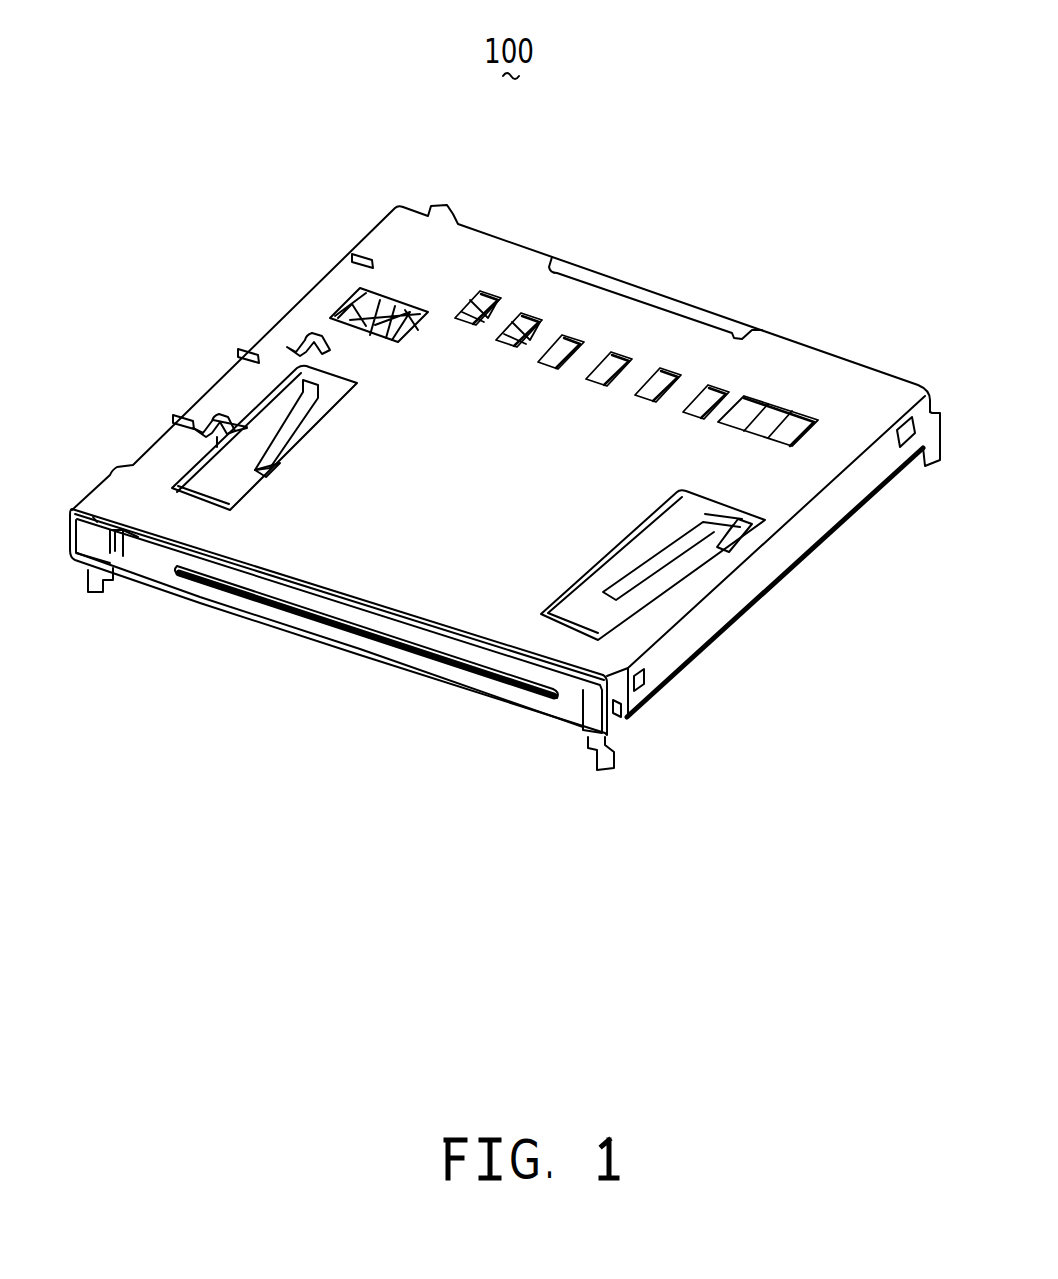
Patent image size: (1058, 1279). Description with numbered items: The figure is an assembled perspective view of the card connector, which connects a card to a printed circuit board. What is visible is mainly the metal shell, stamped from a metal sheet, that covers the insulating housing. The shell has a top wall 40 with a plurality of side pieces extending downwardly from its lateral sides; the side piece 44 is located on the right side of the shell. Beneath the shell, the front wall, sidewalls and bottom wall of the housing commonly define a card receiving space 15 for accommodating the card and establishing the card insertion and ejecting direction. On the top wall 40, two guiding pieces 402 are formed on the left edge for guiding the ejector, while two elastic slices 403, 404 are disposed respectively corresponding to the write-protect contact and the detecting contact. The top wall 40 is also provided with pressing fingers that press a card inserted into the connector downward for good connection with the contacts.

The top wall 40 is at (817, 369).
The side piece 44 is at (847, 480).
The card receiving space 15 is at (155, 550).
The guiding pieces 402 is at (215, 440).
The elastic slice 403 is at (357, 300).
The elastic slice 404 is at (735, 533).